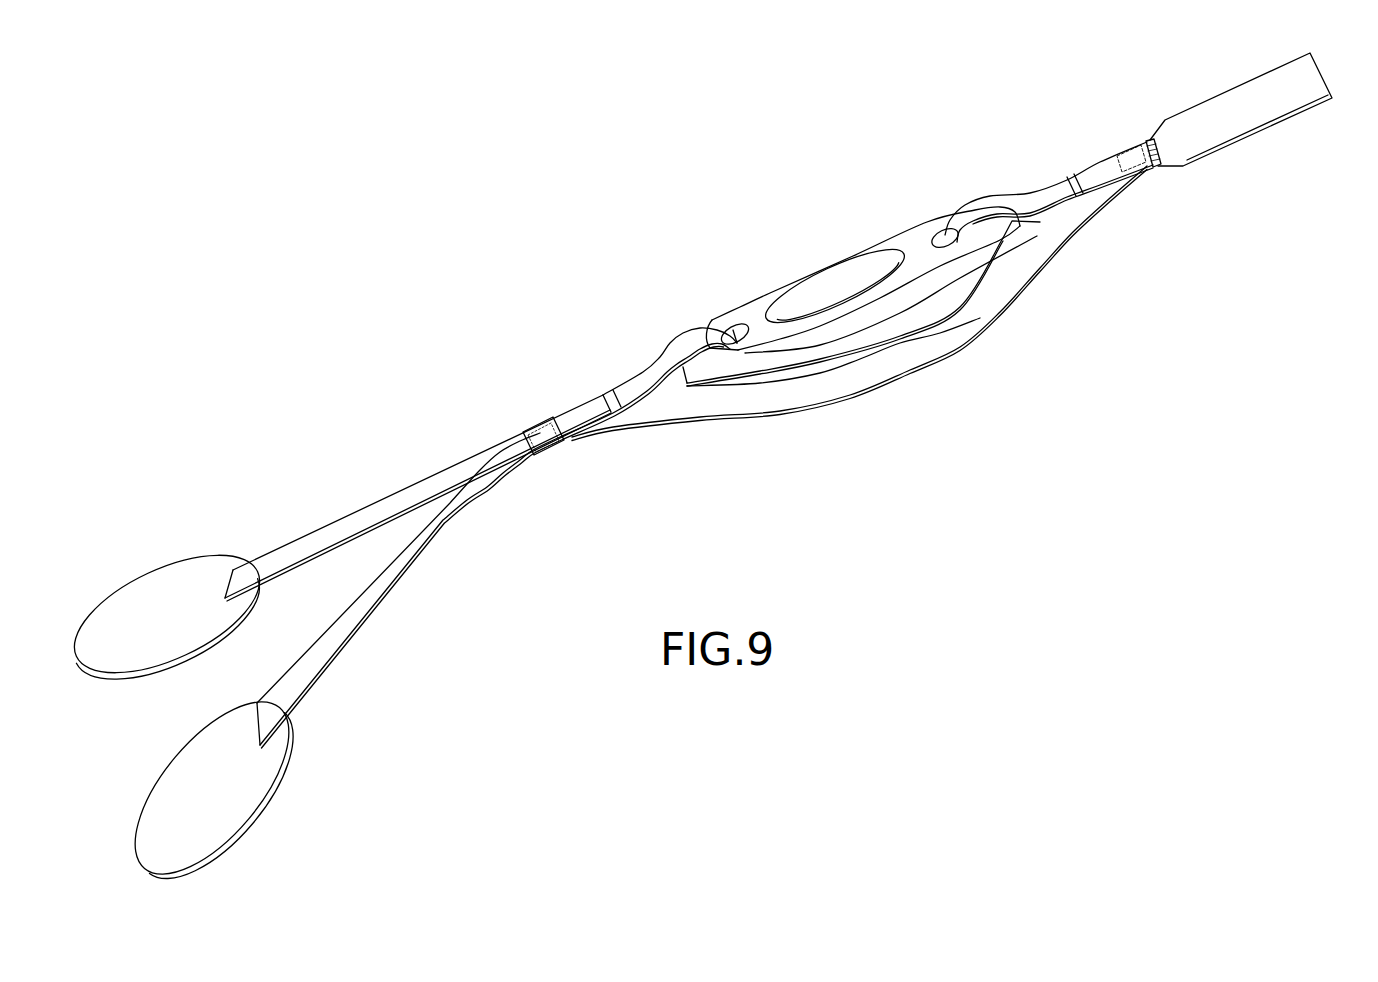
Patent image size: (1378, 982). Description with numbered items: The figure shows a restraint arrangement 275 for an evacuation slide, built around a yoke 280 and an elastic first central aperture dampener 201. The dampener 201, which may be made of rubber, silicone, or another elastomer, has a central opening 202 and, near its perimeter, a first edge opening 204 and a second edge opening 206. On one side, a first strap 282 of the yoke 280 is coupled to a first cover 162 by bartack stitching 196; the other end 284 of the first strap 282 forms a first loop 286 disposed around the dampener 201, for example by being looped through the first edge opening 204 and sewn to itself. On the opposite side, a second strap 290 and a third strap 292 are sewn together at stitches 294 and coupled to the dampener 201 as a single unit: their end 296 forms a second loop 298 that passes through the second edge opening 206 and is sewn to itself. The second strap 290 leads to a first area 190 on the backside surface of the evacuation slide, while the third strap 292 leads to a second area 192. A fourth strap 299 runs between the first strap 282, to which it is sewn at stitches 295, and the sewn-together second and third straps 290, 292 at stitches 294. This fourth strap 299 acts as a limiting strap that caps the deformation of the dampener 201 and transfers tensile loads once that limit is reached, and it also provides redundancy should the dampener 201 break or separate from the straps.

The first cover 162 is at (1196, 112).
The bartack stitching 196 is at (1149, 135).
The stitches 295 is at (1133, 180).
The yoke 280 is at (920, 227).
The first strap 282 is at (1082, 176).
The end of first strap 284 is at (1056, 192).
The first loop 286 is at (1016, 234).
The first central aperture dampener 201 is at (851, 263).
The central opening 202 is at (861, 286).
The first edge opening 204 is at (936, 231).
The second edge opening 206 is at (742, 333).
The restraint arrangement 275 is at (602, 532).
The second strap 290 is at (461, 468).
The third strap 292 is at (453, 520).
The stitches 294 is at (537, 428).
The end of sewn together second strap and third strap 296 is at (621, 389).
The second loop 298 is at (678, 382).
The fourth strap 299 is at (714, 413).
The first area 190 is at (197, 575).
The second area 192 is at (238, 722).